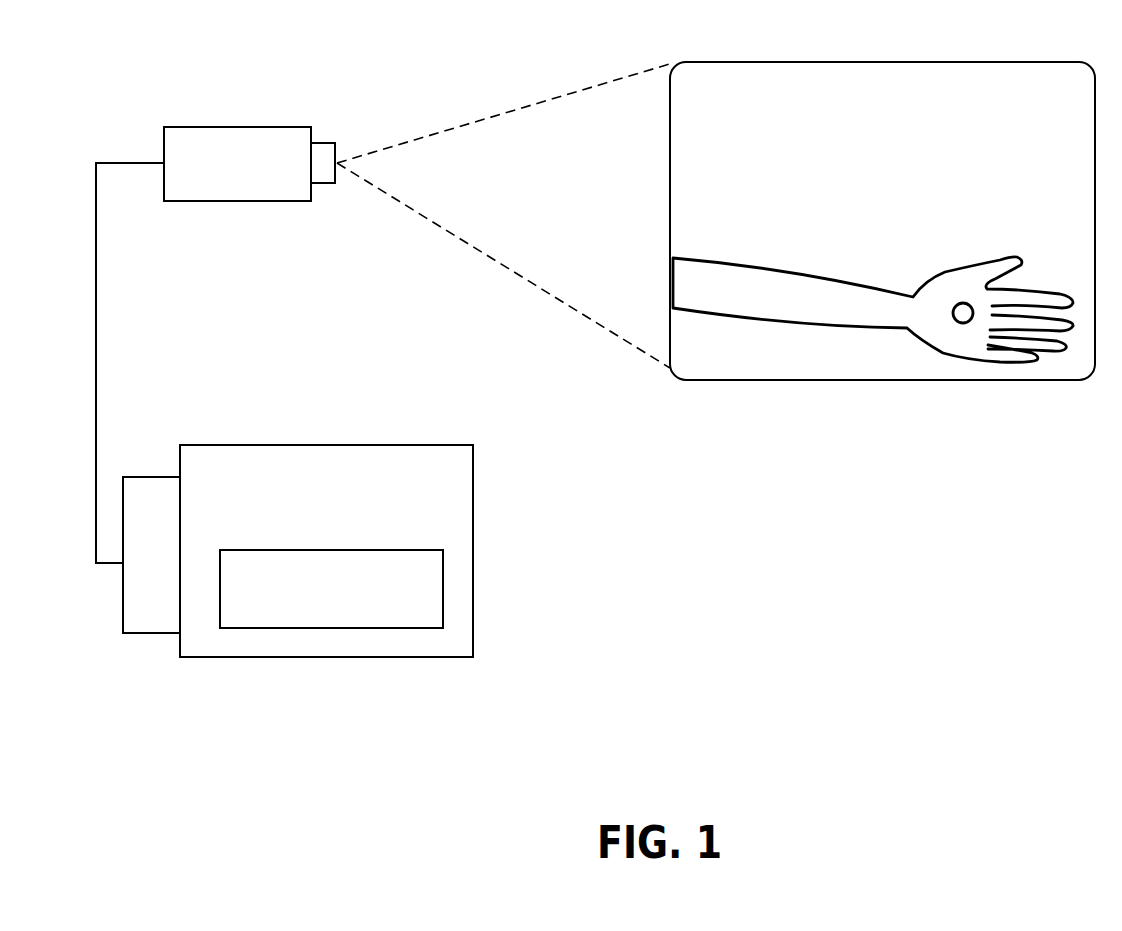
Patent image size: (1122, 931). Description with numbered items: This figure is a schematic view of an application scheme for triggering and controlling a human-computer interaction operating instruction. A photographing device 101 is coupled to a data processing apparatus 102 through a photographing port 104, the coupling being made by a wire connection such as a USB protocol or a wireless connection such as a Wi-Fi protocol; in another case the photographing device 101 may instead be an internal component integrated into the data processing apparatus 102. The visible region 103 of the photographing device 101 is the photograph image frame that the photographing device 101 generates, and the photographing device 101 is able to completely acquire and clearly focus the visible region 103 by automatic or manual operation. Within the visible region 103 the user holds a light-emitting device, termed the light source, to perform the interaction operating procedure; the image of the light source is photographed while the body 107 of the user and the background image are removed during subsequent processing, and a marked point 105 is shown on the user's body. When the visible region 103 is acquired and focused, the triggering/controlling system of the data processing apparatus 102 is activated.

The photographing device 101 is at (252, 126).
The data processing apparatus 102 is at (473, 455).
The visible region 103 is at (920, 61).
The photographing port 104 is at (122, 588).
The acupoint / target point marker 105 is at (961, 310).
The body of user 107 is at (807, 275).